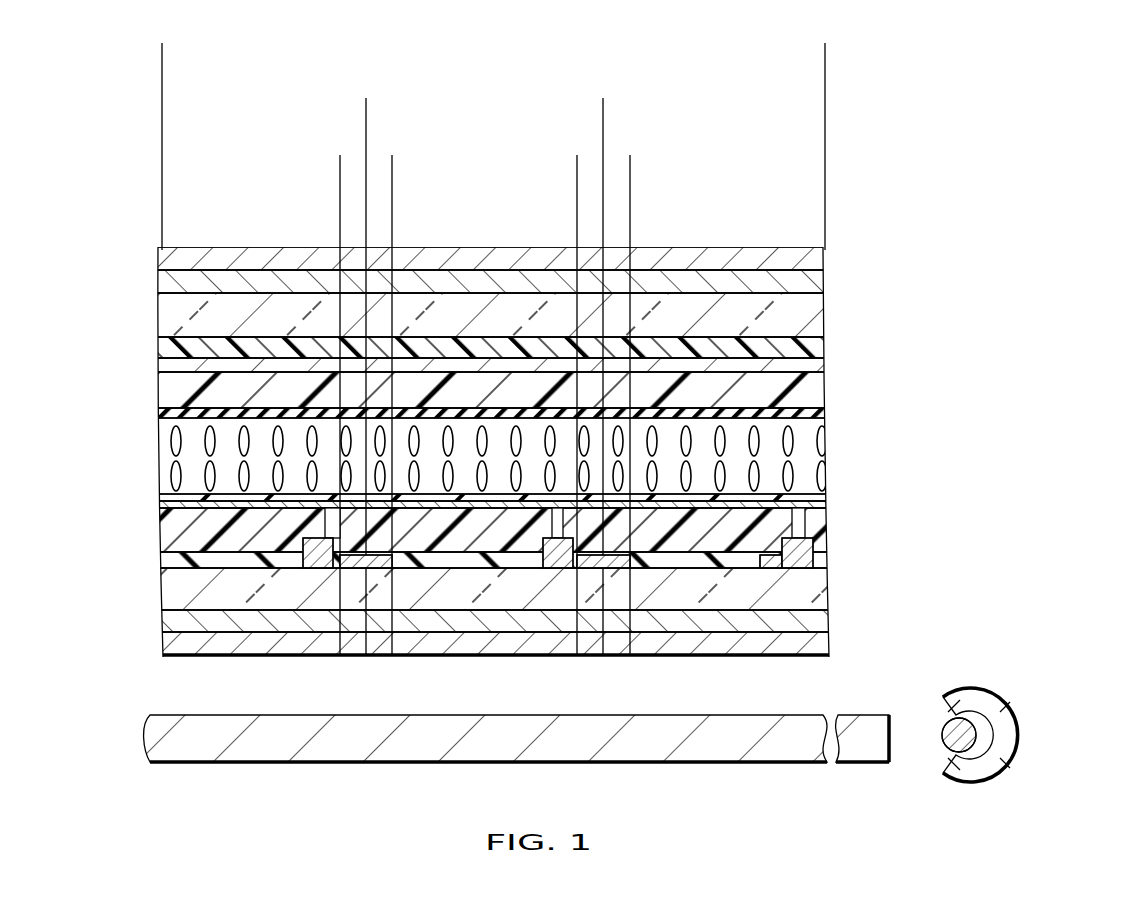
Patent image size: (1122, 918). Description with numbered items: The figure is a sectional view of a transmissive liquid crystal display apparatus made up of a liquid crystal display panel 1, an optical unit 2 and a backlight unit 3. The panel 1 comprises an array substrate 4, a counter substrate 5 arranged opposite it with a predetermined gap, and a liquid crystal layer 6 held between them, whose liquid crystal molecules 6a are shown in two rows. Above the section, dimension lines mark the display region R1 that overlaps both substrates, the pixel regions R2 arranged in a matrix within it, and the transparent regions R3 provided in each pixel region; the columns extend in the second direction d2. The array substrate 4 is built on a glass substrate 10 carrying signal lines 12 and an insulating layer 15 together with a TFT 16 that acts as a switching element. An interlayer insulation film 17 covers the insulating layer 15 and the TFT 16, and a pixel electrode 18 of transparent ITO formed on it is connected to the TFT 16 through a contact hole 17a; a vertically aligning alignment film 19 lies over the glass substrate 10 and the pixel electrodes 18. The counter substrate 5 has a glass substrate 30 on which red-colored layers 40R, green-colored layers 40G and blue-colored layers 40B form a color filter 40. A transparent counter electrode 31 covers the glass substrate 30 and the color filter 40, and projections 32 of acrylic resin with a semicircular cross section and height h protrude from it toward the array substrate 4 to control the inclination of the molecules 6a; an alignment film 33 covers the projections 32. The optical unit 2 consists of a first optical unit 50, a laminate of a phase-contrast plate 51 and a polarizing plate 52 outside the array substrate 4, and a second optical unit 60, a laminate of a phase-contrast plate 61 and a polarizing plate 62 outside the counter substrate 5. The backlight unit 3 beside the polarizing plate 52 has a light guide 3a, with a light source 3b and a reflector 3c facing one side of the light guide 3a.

The liquid crystal display panel 1 is at (1005, 340).
The optical unit 2 is at (60, 245).
The backlight unit 3 is at (1035, 730).
The light guide 3a is at (858, 755).
The light source 3b is at (940, 745).
The reflector 3c is at (996, 765).
The array substrate 4 is at (845, 583).
The counter substrate 5 is at (848, 298).
The liquid crystal layer 6 is at (810, 440).
The liquid crystal molecules 6a is at (793, 477).
The glass substrate 10 is at (257, 590).
The signal lines 12 is at (381, 562).
The insulating layer 15 is at (297, 562).
The TFT 16 is at (556, 560).
The interlayer insulation film 17 is at (431, 535).
The contact hole 17a is at (312, 522).
The pixel electrode 18 is at (198, 505).
The alignment film 19 is at (722, 497).
The glass substrate 30 is at (229, 300).
The counter electrode 31 is at (825, 362).
The projections 32 is at (825, 392).
The alignment film 33 is at (825, 410).
The color filter 40 is at (825, 345).
The red-colored layers 40R is at (294, 345).
The green-colored layers 40G is at (511, 345).
The blue-colored layers 40B is at (712, 345).
The first optical unit 50 is at (98, 613).
The phase-contrast plate 51 is at (158, 622).
The polarizing plate 52 is at (160, 645).
The second optical unit 60 is at (98, 253).
The phase-contrast plate 61 is at (158, 283).
The polarizing plate 62 is at (158, 260).
The height h is at (160, 408).
The second direction d2 is at (1033, 203).
The display region R1 is at (163, 57).
The pixel regions R2 is at (602, 110).
The transparent regions R3 is at (163, 168).